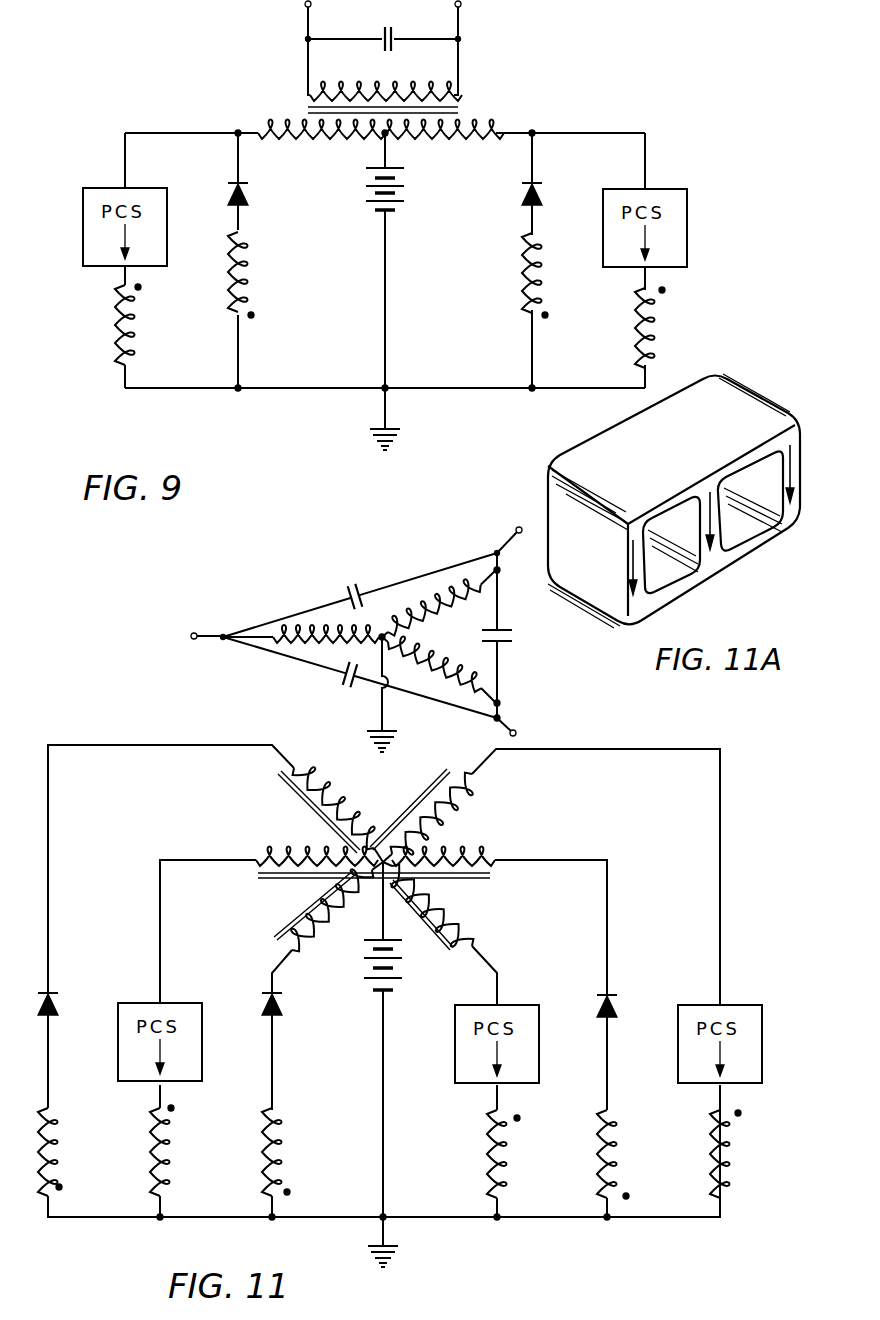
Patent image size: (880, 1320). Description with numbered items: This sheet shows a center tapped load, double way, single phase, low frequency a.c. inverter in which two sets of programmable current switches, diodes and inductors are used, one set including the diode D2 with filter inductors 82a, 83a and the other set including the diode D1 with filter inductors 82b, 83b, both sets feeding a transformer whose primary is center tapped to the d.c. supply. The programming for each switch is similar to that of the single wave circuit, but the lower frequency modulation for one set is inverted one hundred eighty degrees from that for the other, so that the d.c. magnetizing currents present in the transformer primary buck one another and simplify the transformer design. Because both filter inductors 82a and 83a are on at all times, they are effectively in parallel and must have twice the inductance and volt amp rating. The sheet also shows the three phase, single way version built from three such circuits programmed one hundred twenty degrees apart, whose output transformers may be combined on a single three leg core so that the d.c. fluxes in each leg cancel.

The filter inductor 82a is at (106, 328).
The filter inductor 83a is at (250, 277).
The winding 82b is at (516, 282).
The winding 83b is at (655, 325).
The diode D1 is at (547, 197).
The diode D2 is at (255, 197).